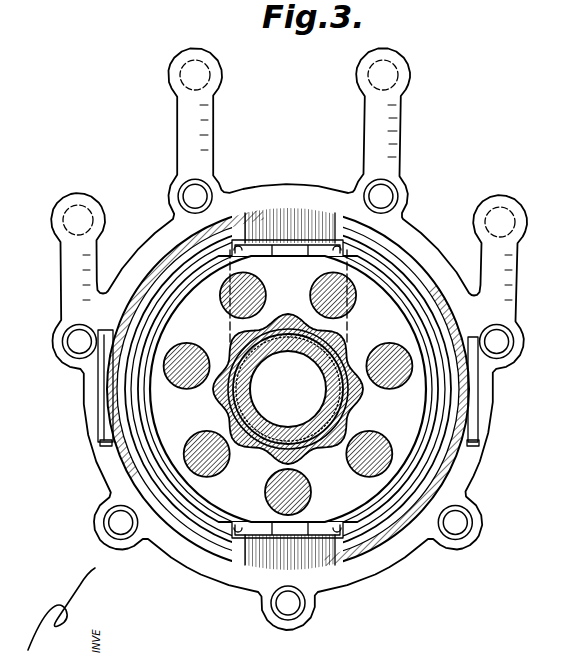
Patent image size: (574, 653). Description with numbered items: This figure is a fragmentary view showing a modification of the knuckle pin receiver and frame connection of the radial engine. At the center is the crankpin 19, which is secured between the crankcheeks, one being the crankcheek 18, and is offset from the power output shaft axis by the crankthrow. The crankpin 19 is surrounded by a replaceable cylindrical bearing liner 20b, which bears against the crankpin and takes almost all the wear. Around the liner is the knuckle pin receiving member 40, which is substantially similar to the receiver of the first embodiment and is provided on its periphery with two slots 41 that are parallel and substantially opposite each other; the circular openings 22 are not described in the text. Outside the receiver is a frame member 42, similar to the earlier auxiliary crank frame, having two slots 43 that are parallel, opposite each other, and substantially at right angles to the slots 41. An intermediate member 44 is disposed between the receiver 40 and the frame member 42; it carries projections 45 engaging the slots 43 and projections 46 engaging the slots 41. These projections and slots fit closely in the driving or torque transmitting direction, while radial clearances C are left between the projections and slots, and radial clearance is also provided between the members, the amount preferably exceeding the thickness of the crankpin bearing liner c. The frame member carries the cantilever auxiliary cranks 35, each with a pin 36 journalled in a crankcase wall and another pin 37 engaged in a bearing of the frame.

The crankcheek 18 is at (348, 333).
The crankpin 19 is at (316, 352).
The cylindrical bearing liner 20b is at (277, 447).
The ports 22 is at (355, 462).
The auxiliary crank 35 is at (402, 128).
The pin 36 is at (407, 61).
The pin 37 is at (398, 194).
The knuckle pin receiving member 40 is at (422, 466).
The slot 41 is at (338, 240).
The frame member 42 is at (488, 426).
The slot 43 is at (105, 443).
The intermediate member 44 is at (410, 258).
The projection 45 is at (112, 372).
The projection 46 is at (262, 240).
The radial clearance C is at (440, 400).
The crankpin bearing liner c is at (289, 330).